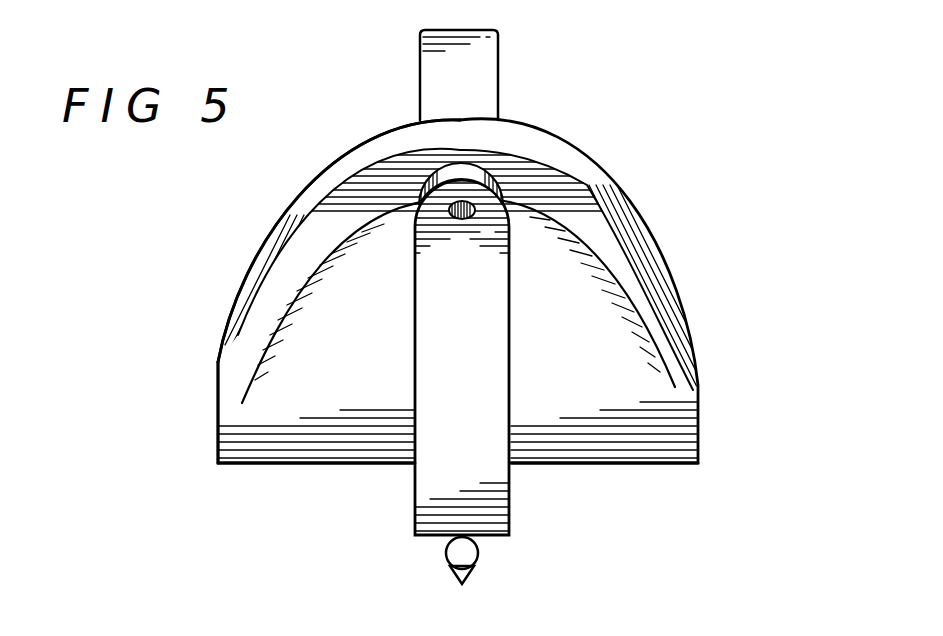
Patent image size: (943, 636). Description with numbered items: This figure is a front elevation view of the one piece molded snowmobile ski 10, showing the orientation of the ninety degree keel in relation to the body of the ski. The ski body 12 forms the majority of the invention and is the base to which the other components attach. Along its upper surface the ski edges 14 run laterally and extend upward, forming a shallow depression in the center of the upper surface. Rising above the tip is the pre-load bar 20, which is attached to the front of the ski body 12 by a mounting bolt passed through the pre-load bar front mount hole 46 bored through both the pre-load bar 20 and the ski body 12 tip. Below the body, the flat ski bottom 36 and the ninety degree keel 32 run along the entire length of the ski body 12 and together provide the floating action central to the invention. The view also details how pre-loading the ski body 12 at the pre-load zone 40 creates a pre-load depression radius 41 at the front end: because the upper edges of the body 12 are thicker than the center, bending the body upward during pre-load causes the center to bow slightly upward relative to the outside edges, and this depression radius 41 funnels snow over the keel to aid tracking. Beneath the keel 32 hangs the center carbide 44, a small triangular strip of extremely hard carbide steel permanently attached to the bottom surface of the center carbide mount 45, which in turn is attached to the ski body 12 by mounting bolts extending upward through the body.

The one piece molded snowmobile ski 10 is at (218, 262).
The ski body 12 is at (222, 321).
The ski edges 14 is at (270, 222).
The pre-load bar 20 is at (505, 88).
The ninety degree keel 32 is at (517, 493).
The flat ski bottom 36 is at (265, 466).
The pre-load zone 40 is at (680, 372).
The pre-load depression radius 41 is at (585, 300).
The center carbide 44 is at (476, 575).
The center carbide mount 45 is at (437, 552).
The pre-load bar front mount hole 46 is at (476, 205).